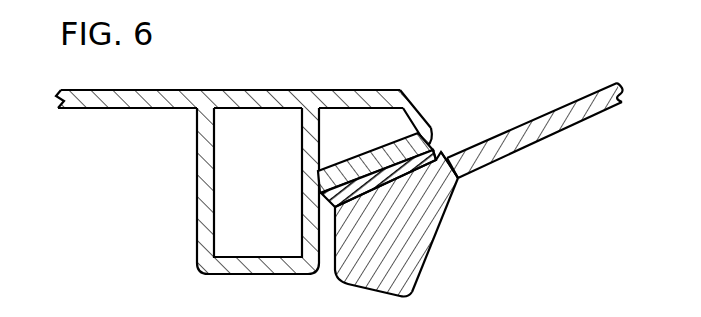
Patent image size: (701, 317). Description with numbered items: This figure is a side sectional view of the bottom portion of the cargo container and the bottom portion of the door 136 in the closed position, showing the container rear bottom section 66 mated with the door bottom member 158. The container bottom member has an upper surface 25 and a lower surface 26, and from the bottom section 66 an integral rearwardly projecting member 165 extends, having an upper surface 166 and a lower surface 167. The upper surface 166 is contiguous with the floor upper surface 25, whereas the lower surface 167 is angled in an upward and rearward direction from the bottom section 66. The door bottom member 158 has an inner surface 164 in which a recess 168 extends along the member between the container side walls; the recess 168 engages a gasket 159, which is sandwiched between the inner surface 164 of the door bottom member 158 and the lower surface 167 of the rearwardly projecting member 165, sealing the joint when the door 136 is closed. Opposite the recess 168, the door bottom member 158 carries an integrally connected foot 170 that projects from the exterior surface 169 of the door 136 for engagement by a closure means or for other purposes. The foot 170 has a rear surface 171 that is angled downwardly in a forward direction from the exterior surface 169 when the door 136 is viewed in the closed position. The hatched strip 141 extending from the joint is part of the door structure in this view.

The upper surface 25 is at (260, 94).
The lower surface 26 is at (150, 96).
The container rear bottom section 66 is at (203, 182).
The door 136 is at (599, 92).
The flexible blade 141 is at (568, 101).
The door bottom member 158 is at (458, 178).
The gasket 159 is at (430, 143).
The inner surface 164 is at (372, 158).
The rearwardly projecting member 165 is at (414, 90).
The upper surface 166 is at (367, 92).
The lower surface 167 is at (332, 199).
The recess 168 is at (433, 148).
The exterior surface 169 is at (551, 137).
The foot 170 is at (420, 230).
The rear surface 171 is at (420, 270).